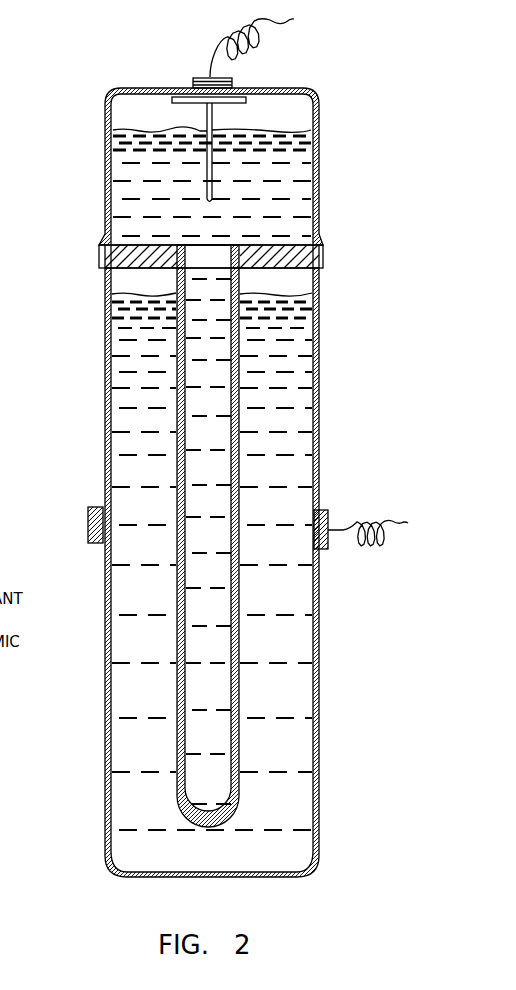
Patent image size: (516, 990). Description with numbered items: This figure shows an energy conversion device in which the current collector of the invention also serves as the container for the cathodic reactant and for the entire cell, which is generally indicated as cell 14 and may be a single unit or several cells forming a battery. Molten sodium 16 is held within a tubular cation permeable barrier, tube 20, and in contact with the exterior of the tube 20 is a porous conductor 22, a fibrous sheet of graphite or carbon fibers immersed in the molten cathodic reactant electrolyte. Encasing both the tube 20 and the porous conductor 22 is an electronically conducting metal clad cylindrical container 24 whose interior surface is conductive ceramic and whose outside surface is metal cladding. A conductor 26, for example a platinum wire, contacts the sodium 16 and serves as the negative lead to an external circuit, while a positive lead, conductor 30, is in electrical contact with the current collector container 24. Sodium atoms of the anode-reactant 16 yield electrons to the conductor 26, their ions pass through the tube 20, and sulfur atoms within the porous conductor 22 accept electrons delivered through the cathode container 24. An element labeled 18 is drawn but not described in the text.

The cell 14 is at (102, 233).
The sodium 16 is at (284, 175).
The partition flange 18 is at (321, 228).
The tube 20 is at (275, 336).
The porous conductor 22 is at (278, 405).
The cylindrical container 24 is at (314, 465).
The conductor 26 is at (222, 120).
The conductor 30 is at (352, 524).